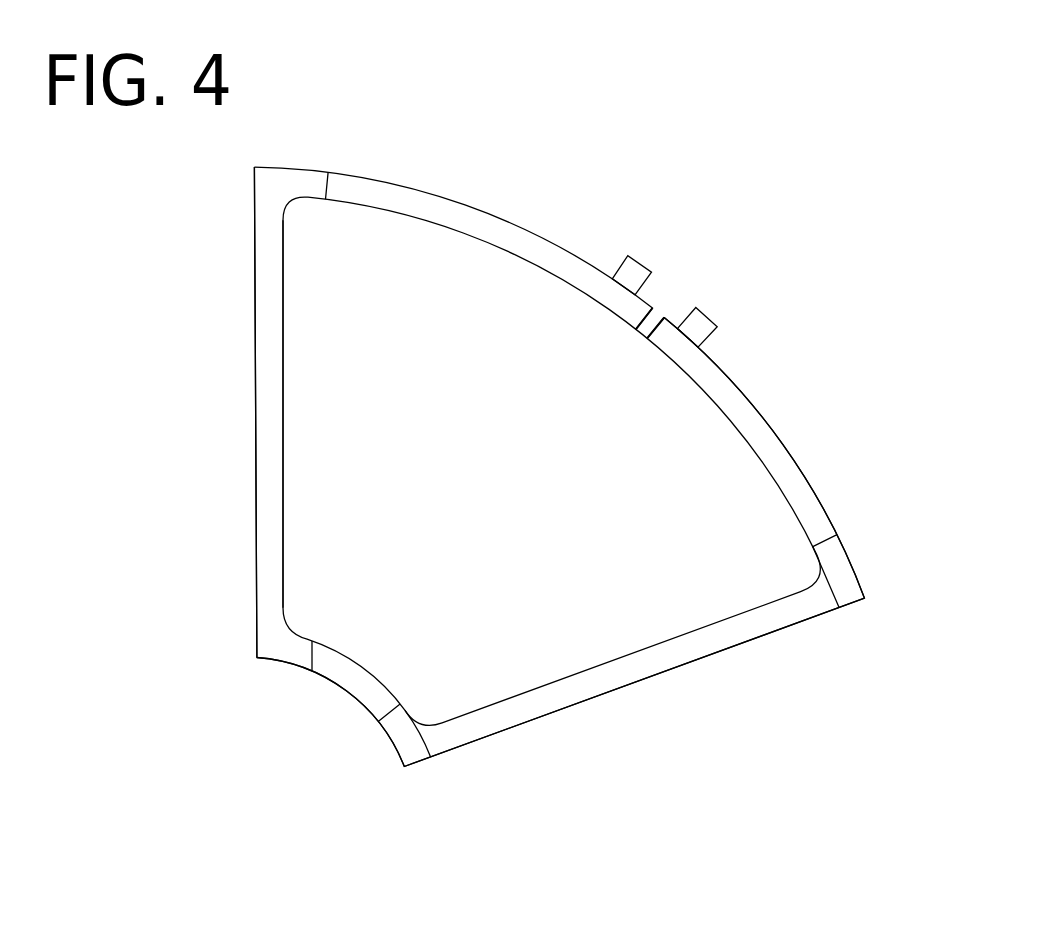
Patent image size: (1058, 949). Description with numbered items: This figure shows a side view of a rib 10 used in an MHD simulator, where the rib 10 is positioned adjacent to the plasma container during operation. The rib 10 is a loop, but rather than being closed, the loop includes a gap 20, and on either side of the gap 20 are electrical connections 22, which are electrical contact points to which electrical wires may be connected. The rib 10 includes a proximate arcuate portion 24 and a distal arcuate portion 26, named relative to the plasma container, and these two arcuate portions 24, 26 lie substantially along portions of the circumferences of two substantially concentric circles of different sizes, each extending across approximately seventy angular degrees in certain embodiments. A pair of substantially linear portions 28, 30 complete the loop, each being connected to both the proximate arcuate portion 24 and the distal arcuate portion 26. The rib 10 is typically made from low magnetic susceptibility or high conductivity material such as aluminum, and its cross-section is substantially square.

The rib 10 is at (420, 203).
The gap 20 is at (642, 323).
The electrical connections 22 is at (635, 257).
The proximate arcuate portion 24 is at (337, 685).
The distal arcuate portion 26 is at (774, 428).
The substantially linear portion 28 is at (255, 344).
The substantially linear portion 30 is at (653, 680).